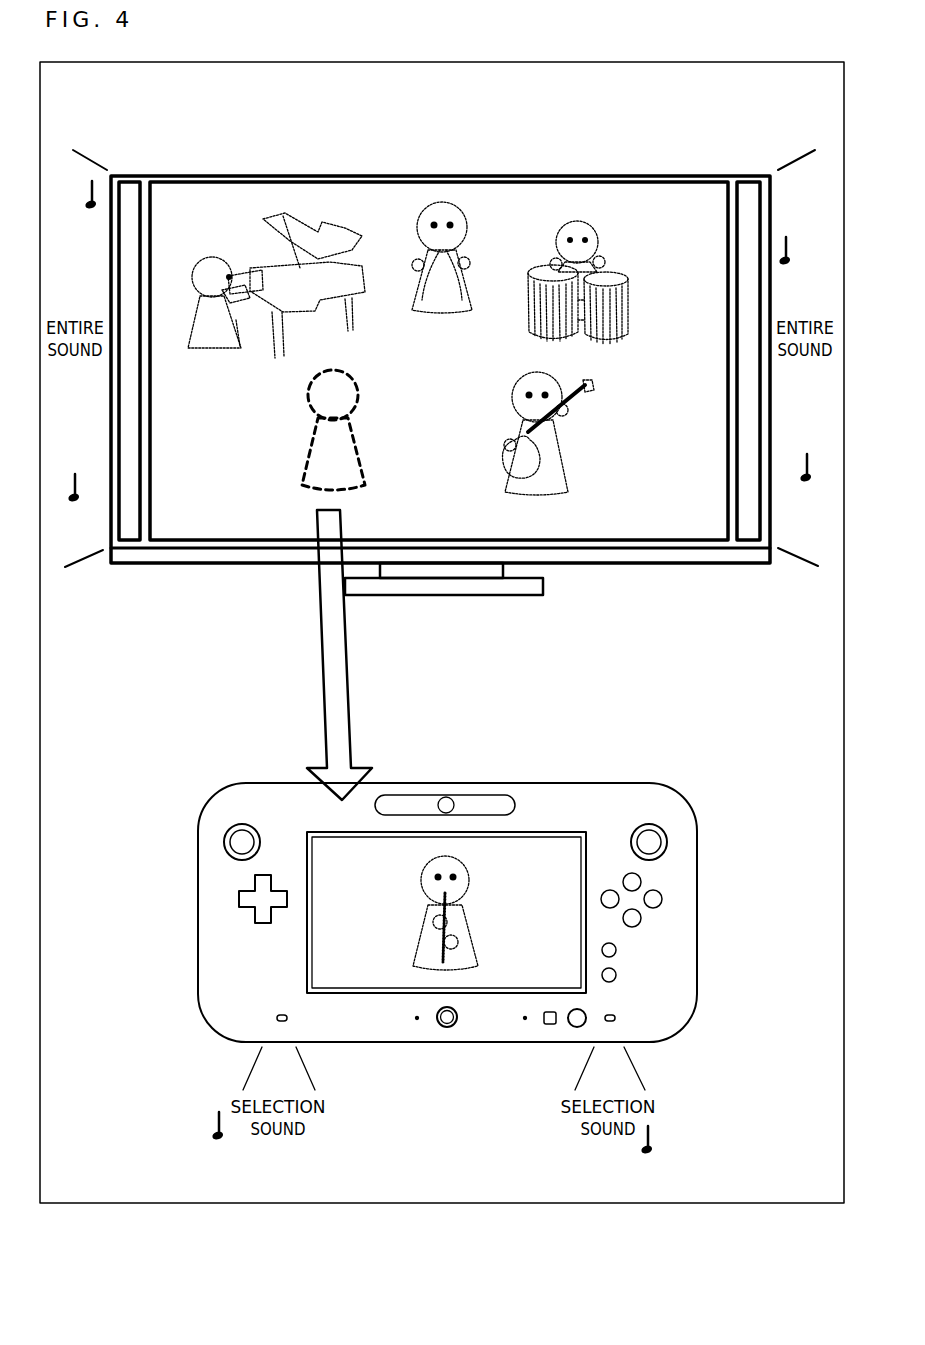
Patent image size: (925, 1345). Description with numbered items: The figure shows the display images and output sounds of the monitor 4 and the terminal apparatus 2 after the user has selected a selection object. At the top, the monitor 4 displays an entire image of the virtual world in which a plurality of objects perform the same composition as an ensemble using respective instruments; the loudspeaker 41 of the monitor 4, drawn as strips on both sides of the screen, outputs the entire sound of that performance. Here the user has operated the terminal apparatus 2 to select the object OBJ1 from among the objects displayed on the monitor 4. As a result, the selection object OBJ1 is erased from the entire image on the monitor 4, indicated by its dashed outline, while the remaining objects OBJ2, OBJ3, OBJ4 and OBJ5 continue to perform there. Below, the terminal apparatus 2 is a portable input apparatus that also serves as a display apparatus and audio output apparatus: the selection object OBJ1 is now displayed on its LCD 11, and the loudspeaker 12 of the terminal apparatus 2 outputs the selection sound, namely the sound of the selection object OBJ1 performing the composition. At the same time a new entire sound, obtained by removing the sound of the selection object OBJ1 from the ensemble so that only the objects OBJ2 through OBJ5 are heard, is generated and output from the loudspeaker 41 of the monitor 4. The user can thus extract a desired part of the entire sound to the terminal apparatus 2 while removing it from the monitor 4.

The monitor 4 is at (180, 563).
The loudspeaker 41 is at (132, 540).
The terminal apparatus 2 is at (560, 783).
The LCD 11 is at (475, 992).
The loudspeaker 12 is at (285, 1020).
The selection object OBJ1 is at (308, 490).
The object OBJ2 is at (556, 494).
The object OBJ3 is at (287, 215).
The object OBJ4 is at (443, 204).
The object OBJ5 is at (577, 222).